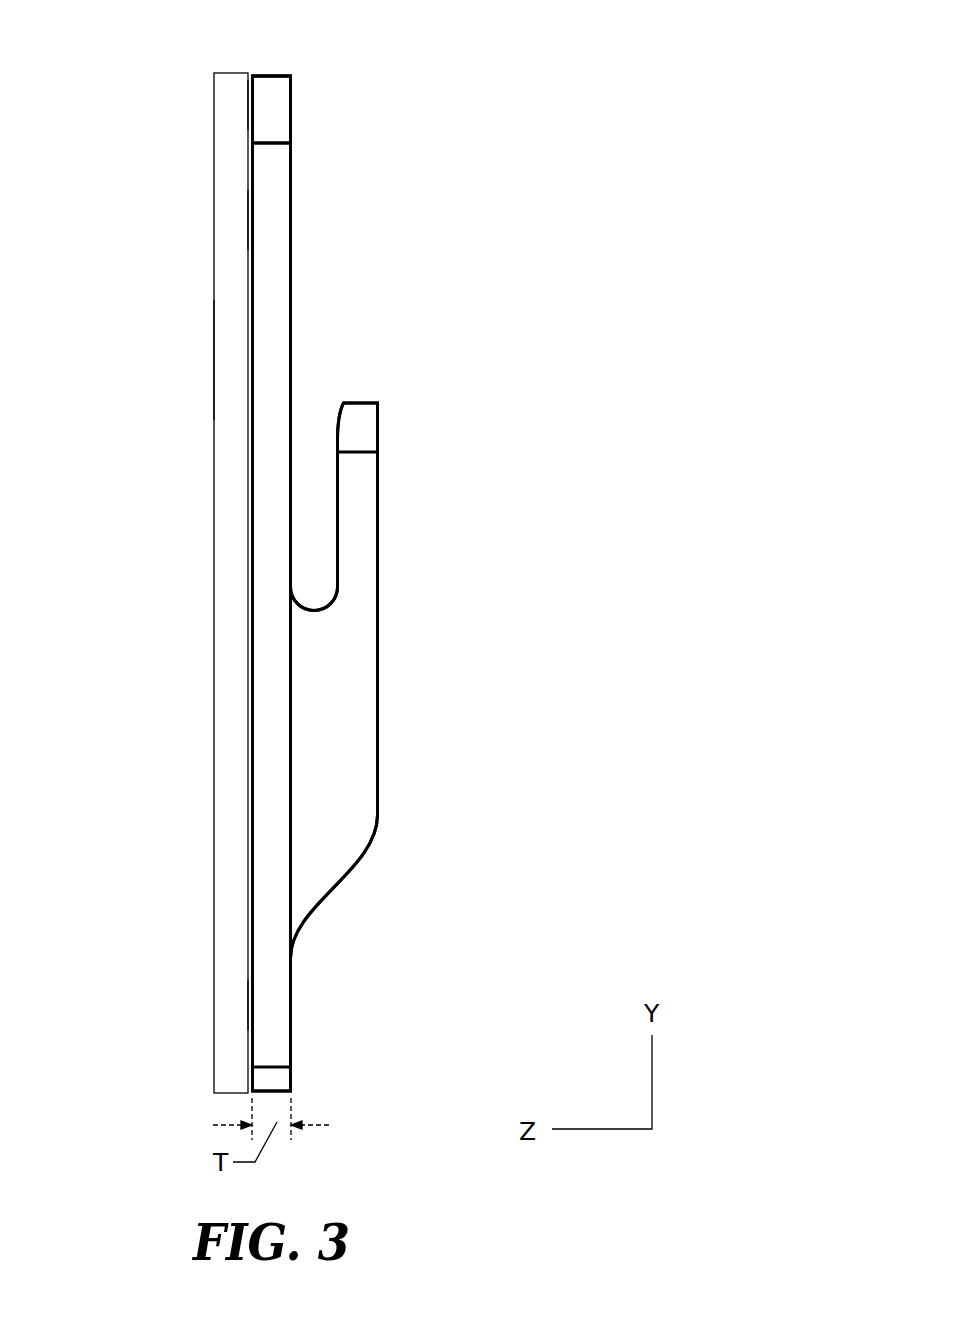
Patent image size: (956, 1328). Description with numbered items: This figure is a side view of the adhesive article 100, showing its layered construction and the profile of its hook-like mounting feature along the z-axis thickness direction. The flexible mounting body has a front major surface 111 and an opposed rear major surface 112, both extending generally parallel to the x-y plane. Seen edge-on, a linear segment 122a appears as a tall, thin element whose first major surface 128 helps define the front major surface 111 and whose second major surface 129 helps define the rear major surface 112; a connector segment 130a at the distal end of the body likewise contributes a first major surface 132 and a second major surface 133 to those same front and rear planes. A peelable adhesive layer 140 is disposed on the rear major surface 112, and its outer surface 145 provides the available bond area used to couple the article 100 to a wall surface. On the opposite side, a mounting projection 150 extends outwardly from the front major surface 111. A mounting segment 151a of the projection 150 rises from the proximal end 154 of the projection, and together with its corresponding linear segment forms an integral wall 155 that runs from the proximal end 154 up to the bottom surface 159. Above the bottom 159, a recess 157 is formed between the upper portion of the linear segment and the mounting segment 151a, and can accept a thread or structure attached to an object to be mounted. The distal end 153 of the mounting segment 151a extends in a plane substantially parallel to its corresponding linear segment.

The adhesive article 100 is at (558, 92).
The front major surface 111 is at (292, 173).
The rear major surface 112 is at (247, 223).
The linear segment 122a is at (283, 258).
The first major surface of linear segment 128 is at (286, 1033).
The second major surface of linear segment 129 is at (250, 1003).
The connector segment 130a is at (270, 92).
The first major surface of connector segment 132 is at (292, 106).
The second major surface of connector segment 133 is at (247, 107).
The adhesive layer 140 is at (227, 890).
The outer surface of adhesive layer 145 is at (214, 357).
The mounting projection 150 is at (523, 985).
The mounting segment 151a is at (362, 492).
The distal end of mounting segment 153 is at (380, 418).
The proximal end of projection 154 is at (295, 947).
The wall 155 is at (318, 735).
The recess 157 is at (315, 430).
The bottom surface of recess 159 is at (310, 598).